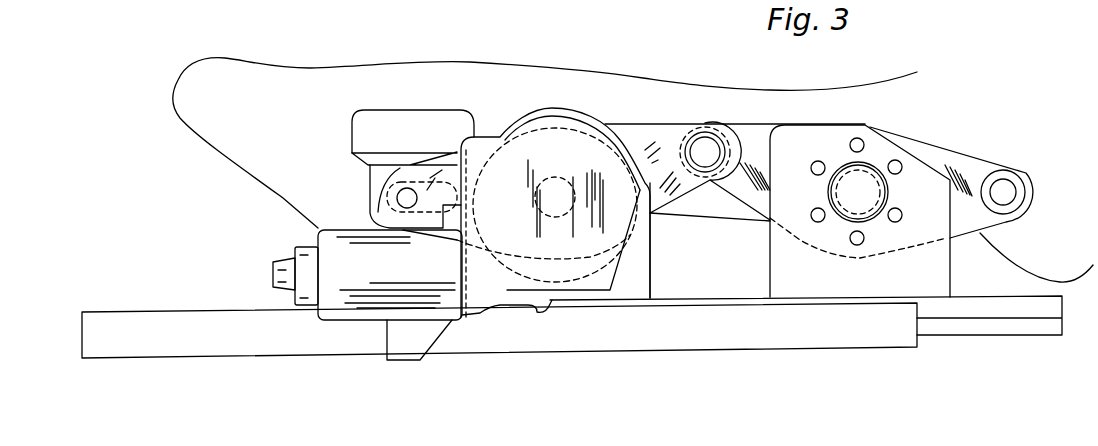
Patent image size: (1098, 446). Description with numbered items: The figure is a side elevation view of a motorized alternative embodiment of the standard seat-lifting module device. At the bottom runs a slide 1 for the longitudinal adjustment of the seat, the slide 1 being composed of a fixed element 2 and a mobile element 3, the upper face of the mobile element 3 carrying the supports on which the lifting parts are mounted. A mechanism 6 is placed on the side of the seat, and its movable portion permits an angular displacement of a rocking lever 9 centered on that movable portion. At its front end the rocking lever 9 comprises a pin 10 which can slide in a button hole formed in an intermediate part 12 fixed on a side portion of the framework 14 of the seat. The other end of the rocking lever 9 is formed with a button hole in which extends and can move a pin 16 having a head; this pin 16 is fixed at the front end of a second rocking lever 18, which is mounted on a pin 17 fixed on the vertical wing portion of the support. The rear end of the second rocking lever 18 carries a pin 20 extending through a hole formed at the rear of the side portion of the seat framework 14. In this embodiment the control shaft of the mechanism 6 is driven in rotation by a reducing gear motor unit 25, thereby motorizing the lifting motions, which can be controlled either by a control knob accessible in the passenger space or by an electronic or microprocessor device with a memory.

The slide 1 is at (817, 335).
The fixed element 2 is at (551, 342).
The mobile element 3 is at (997, 328).
The mechanism 6 is at (573, 117).
The rocking lever 9 is at (625, 133).
The pin 10 is at (397, 197).
The intermediate part 12 is at (352, 134).
The framework 14 is at (558, 68).
The pin 16 is at (710, 137).
The pin 17 is at (865, 175).
The second rocking lever 18 is at (943, 158).
The pin 20 is at (1015, 190).
The reducing gear motor unit 25 is at (485, 273).